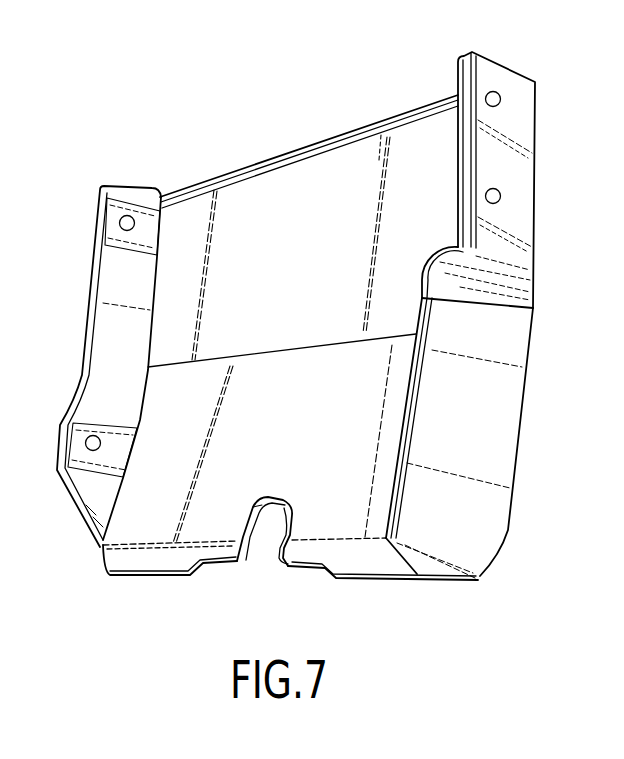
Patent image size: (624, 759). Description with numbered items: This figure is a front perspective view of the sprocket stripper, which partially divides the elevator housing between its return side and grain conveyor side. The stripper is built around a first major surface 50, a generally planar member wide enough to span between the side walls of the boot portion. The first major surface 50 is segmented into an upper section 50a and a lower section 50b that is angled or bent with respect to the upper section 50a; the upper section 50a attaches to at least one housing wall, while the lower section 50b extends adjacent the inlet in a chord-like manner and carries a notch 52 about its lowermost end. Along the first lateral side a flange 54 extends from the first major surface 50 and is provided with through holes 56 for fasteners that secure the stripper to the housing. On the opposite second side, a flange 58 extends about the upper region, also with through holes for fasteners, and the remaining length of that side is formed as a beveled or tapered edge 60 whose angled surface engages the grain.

The first major surface 50 is at (265, 213).
The upper section 50a is at (347, 177).
The lower section 50b is at (373, 520).
The notch 52 is at (262, 530).
The flange 54 is at (100, 200).
The through holes 56 is at (118, 227).
The flange 58 is at (512, 68).
The tapered edge 60 is at (516, 458).